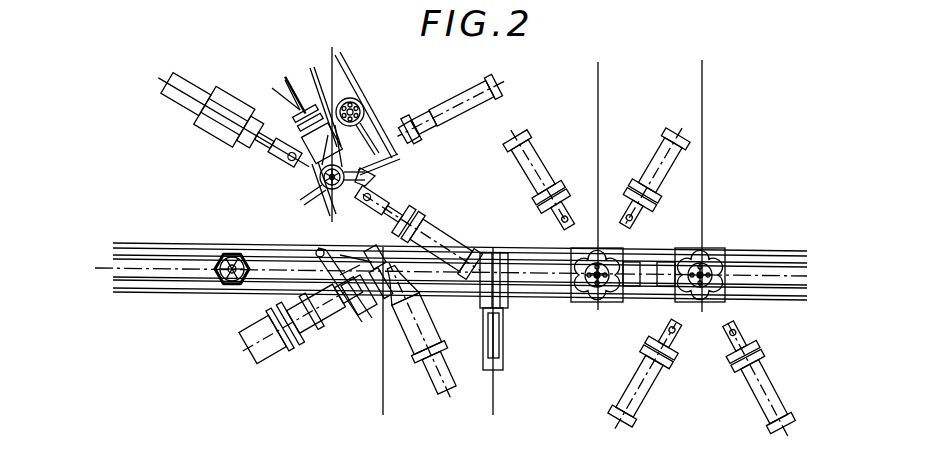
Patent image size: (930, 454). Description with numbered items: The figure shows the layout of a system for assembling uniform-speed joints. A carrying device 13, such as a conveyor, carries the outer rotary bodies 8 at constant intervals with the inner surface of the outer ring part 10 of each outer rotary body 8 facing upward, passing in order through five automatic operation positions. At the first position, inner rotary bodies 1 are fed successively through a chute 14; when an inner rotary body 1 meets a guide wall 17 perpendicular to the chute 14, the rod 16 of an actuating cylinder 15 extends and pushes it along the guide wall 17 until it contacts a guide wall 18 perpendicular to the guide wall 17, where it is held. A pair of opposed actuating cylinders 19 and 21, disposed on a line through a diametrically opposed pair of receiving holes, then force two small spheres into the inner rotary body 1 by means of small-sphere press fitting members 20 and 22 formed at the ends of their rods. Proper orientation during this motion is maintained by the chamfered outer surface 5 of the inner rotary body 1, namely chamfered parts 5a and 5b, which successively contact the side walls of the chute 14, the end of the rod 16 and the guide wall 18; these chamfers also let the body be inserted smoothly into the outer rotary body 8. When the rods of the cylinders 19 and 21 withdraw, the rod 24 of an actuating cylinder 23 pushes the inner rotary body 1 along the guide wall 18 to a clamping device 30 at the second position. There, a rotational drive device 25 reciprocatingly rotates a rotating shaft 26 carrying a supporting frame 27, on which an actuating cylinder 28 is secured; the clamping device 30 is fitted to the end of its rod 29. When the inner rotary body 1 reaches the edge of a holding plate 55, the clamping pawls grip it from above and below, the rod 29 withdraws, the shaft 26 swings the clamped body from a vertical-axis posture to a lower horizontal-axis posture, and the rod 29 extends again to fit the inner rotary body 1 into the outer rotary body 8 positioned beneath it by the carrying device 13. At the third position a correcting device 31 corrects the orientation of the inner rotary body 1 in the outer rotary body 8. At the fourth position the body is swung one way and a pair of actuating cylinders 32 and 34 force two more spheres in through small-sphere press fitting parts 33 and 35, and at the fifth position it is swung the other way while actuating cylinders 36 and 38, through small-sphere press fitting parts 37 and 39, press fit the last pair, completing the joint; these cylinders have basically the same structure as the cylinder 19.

The inner rotary body 1 is at (360, 102).
The rotary head 5 is at (332, 177).
The chamfered part 5a is at (365, 120).
The chamfered part 5b is at (340, 135).
The outer rotary body 8 is at (224, 283).
The outer ring part 10 is at (228, 252).
The carrying device 13 is at (154, 244).
The chute 14 is at (340, 74).
The actuating cylinder 15 is at (462, 118).
The rod 16 is at (420, 122).
The guide wall 17 is at (394, 160).
The guide wall 18 is at (318, 205).
The actuating cylinder 19 is at (458, 238).
The small-sphere press fitting member 20 is at (380, 205).
The actuating cylinder 21 is at (208, 142).
The small-sphere press fitting member 22 is at (280, 158).
The actuating cylinder 23 is at (276, 96).
The rod 24 is at (292, 102).
The rotational drive device 25 is at (274, 310).
The rotating shaft 26 is at (340, 332).
The supporting frame 27 is at (344, 274).
The actuating cylinder 28 is at (382, 340).
The rod 29 is at (368, 312).
The clamping device 30 is at (410, 300).
The correcting device 31 is at (508, 302).
The actuating cylinder 32 is at (530, 136).
The small-sphere press fitting part 33 is at (552, 222).
The actuating cylinder 34 is at (658, 146).
The small-sphere press fitting part 35 is at (614, 214).
The actuating cylinder 36 is at (640, 402).
The small-sphere press fitting part 37 is at (668, 344).
The actuating cylinder 38 is at (770, 374).
The small-sphere press fitting part 39 is at (742, 320).
The holding plate 55 is at (363, 248).